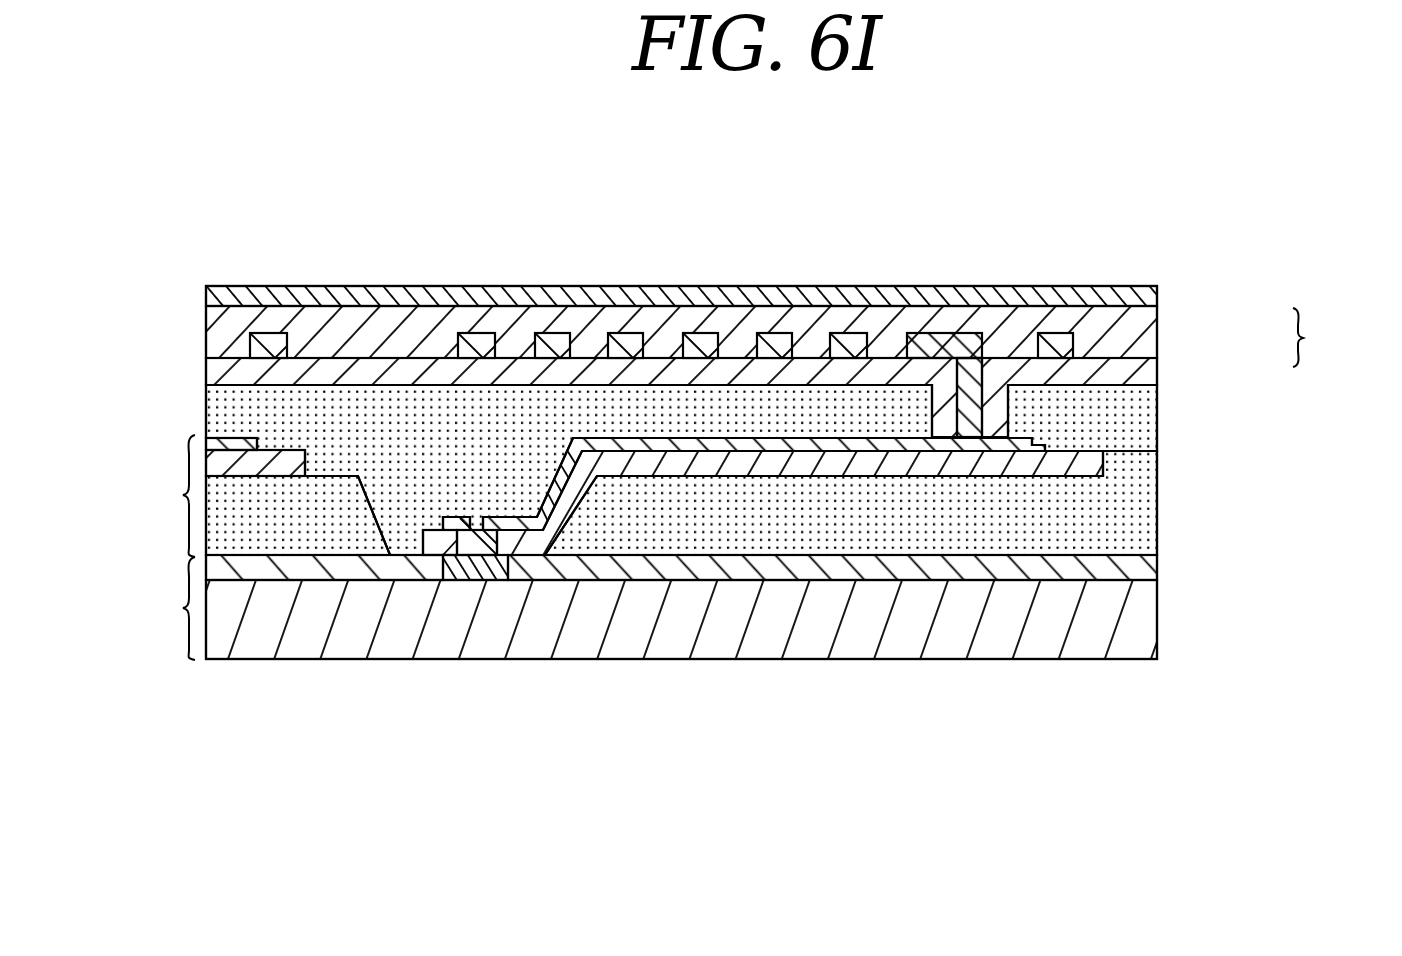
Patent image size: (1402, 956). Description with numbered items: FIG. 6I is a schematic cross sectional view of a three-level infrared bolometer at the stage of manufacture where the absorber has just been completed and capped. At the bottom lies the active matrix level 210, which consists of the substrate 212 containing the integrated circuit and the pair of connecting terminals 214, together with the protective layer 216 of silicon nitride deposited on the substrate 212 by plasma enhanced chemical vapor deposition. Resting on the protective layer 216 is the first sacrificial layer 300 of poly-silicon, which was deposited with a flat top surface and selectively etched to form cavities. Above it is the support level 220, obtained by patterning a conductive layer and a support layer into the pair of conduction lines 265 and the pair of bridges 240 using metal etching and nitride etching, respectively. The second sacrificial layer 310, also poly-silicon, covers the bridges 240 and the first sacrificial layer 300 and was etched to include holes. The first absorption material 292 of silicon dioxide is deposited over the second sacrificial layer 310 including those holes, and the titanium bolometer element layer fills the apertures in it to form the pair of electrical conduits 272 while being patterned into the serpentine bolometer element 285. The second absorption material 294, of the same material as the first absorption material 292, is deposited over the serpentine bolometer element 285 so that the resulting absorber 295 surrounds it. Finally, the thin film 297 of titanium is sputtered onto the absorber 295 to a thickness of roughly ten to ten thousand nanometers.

The active matrix level 210 is at (151, 608).
The substrate 212 is at (1141, 632).
The connecting terminals 214 is at (473, 568).
The protective layer 216 is at (1141, 573).
The support level 220 is at (151, 496).
The bridges 240 is at (1087, 470).
The conduction lines 265 is at (1032, 444).
The electrical conduits 272 is at (968, 398).
The serpentine bolometer element 285 is at (1052, 345).
The first absorption material 292 is at (1141, 375).
The second absorption material 294 is at (1141, 332).
The absorber 295 is at (1337, 337).
The thin film 297 is at (1140, 286).
The first sacrificial layer 300 is at (1141, 510).
The second sacrificial layer 310 is at (356, 412).